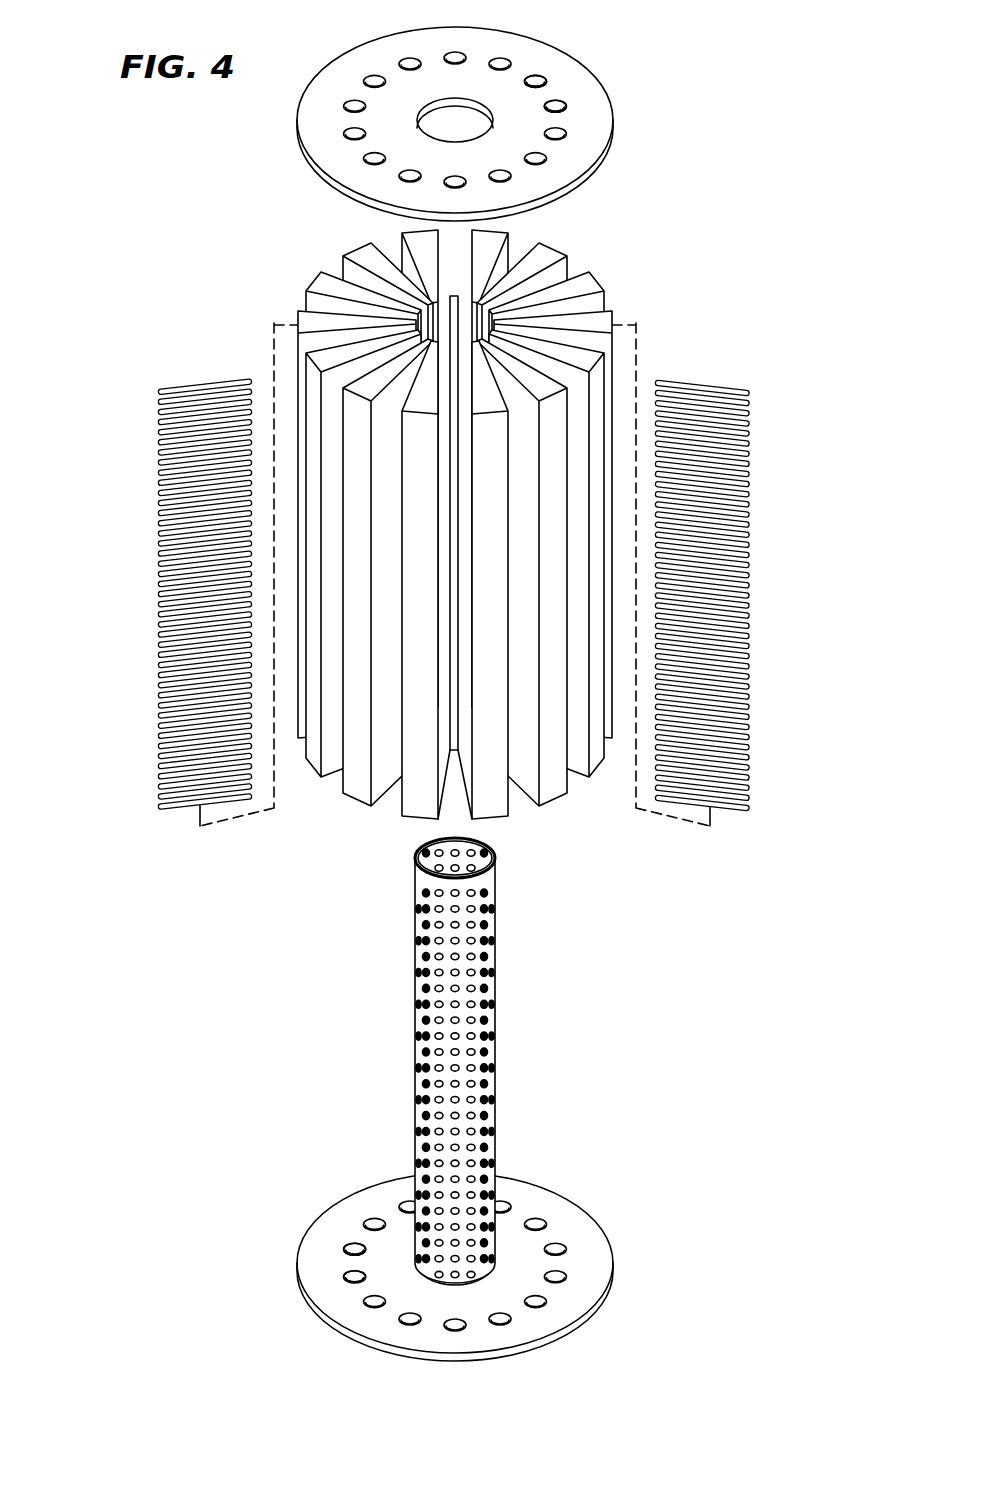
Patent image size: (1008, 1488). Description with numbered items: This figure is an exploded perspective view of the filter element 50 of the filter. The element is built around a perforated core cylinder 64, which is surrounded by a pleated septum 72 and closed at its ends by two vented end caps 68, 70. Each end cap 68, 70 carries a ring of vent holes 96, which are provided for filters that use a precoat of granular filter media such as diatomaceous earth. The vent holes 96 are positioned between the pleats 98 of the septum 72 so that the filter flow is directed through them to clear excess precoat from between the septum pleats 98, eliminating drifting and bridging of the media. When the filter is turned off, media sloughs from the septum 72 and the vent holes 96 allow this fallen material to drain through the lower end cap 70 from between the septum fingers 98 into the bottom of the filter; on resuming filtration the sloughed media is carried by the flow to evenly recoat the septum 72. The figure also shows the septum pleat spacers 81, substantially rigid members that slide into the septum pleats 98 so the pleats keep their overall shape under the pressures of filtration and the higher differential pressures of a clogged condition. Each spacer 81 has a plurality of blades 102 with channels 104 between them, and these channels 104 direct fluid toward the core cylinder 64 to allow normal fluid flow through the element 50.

The filter element 50 is at (105, 592).
The perforated core cylinder 64 is at (508, 972).
The end cap 68 is at (600, 118).
The end cap 70 is at (597, 1252).
The pleated septum 72 is at (562, 803).
The septum pleat spacer 81 is at (148, 724).
The vent holes 96 is at (559, 99).
The pleats 98 is at (415, 808).
The blades 102 is at (750, 403).
The channels 104 is at (750, 488).